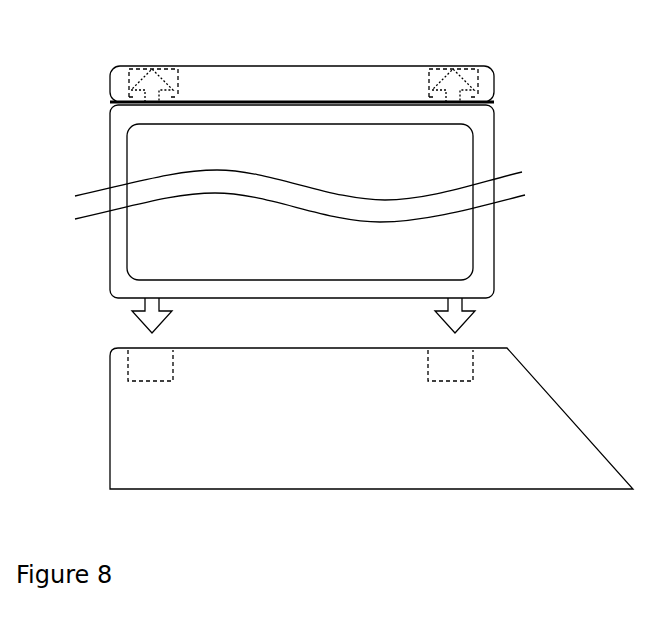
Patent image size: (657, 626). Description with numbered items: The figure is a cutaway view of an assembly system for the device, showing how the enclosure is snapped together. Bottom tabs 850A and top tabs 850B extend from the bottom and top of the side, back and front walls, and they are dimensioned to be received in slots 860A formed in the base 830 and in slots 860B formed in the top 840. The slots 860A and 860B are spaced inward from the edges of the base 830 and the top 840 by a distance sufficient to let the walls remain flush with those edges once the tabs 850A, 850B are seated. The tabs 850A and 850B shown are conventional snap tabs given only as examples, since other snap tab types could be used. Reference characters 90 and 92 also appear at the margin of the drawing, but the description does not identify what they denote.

The base 830 is at (122, 462).
The top 840 is at (234, 80).
The bottom tabs 850A is at (132, 318).
The top tabs 850B is at (157, 67).
The slots 860A is at (130, 373).
The slots 860B is at (126, 67).
The partially visible numeral 90 is at (647, 127).
The partially visible numeral 92 is at (647, 332).